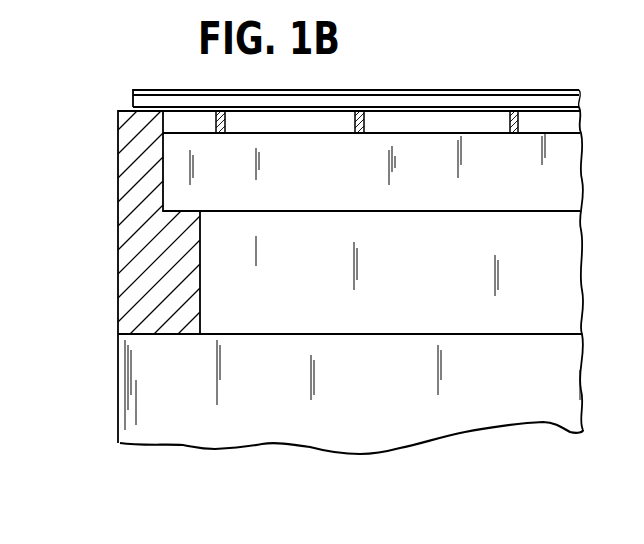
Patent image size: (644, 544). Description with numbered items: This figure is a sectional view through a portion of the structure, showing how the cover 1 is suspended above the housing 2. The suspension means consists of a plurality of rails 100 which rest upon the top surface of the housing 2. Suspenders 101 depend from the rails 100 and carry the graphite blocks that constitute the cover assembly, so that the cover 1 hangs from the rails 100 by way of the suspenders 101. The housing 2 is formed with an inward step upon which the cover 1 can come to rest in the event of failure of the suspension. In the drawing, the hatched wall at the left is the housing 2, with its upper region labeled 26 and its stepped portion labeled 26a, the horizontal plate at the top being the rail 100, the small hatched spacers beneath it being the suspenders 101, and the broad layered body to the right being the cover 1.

The substrate 1 is at (553, 178).
The wall 2 is at (152, 274).
The top surface of wall 26 is at (126, 110).
The step of wall 26a is at (181, 211).
The cover plate 100 is at (573, 88).
The spacer 101 is at (518, 122).